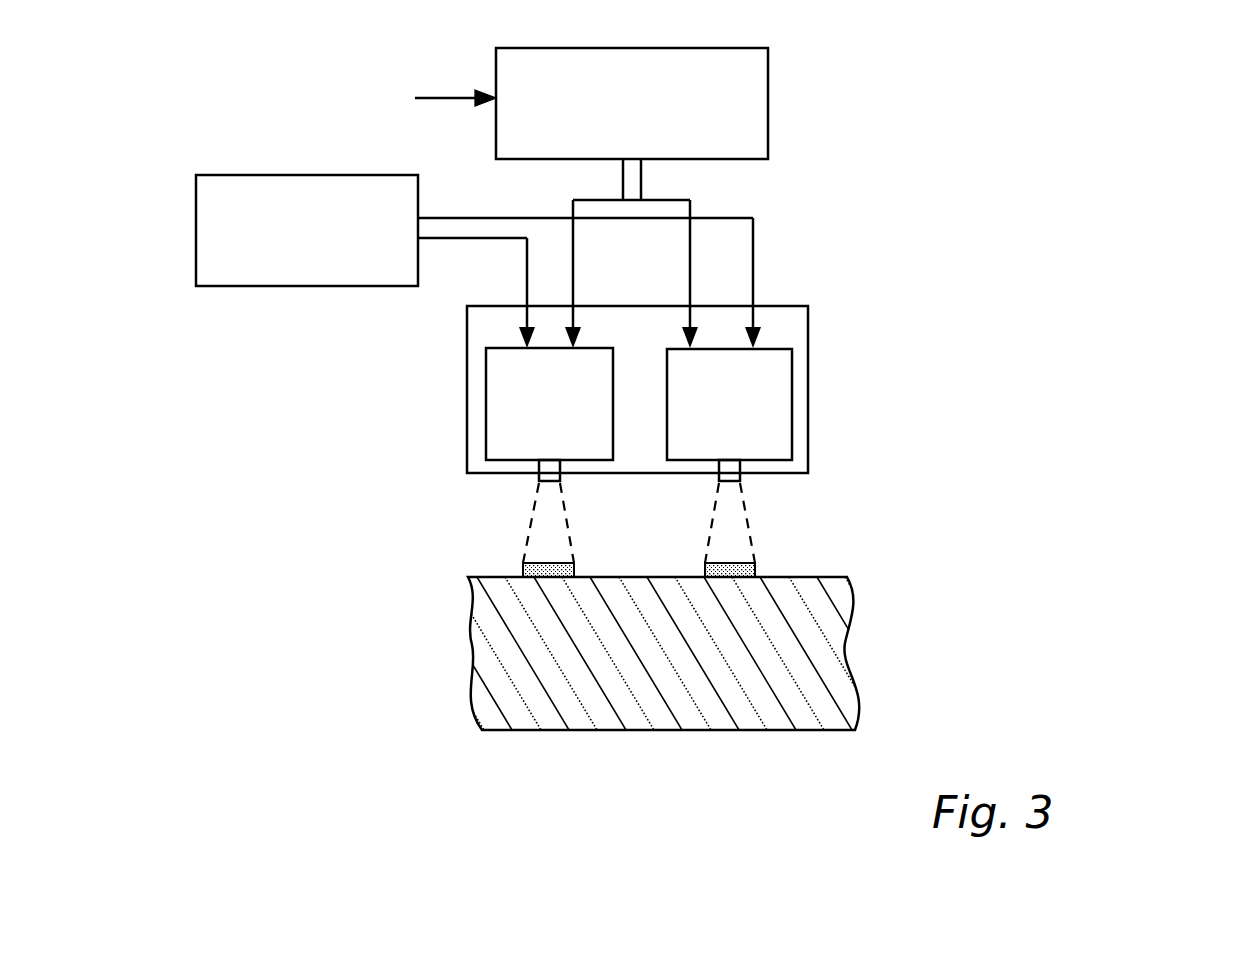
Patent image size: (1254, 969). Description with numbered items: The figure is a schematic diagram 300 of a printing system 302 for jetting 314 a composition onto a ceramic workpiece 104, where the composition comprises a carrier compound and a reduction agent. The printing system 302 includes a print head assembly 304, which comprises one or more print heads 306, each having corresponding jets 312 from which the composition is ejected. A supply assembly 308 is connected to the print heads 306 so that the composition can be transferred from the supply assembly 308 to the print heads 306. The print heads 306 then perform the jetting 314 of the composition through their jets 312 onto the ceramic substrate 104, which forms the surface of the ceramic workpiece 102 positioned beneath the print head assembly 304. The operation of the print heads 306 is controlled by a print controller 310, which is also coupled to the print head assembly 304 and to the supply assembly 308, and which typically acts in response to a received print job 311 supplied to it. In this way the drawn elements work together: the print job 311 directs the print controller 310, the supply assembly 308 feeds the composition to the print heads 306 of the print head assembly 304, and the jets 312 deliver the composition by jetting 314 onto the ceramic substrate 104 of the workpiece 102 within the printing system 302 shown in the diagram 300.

The schematic diagram 300 is at (1148, 118).
The printing system 302 is at (1110, 512).
The print head assembly 304 is at (808, 335).
The print head 306 is at (486, 368).
The supply assembly 308 is at (305, 175).
The print controller 310 is at (768, 123).
The print job 311 is at (438, 98).
The jet 312 is at (539, 485).
The jetting 314 is at (530, 517).
The ceramic workpiece 102 is at (460, 565).
The ceramic substrate 104 is at (853, 668).